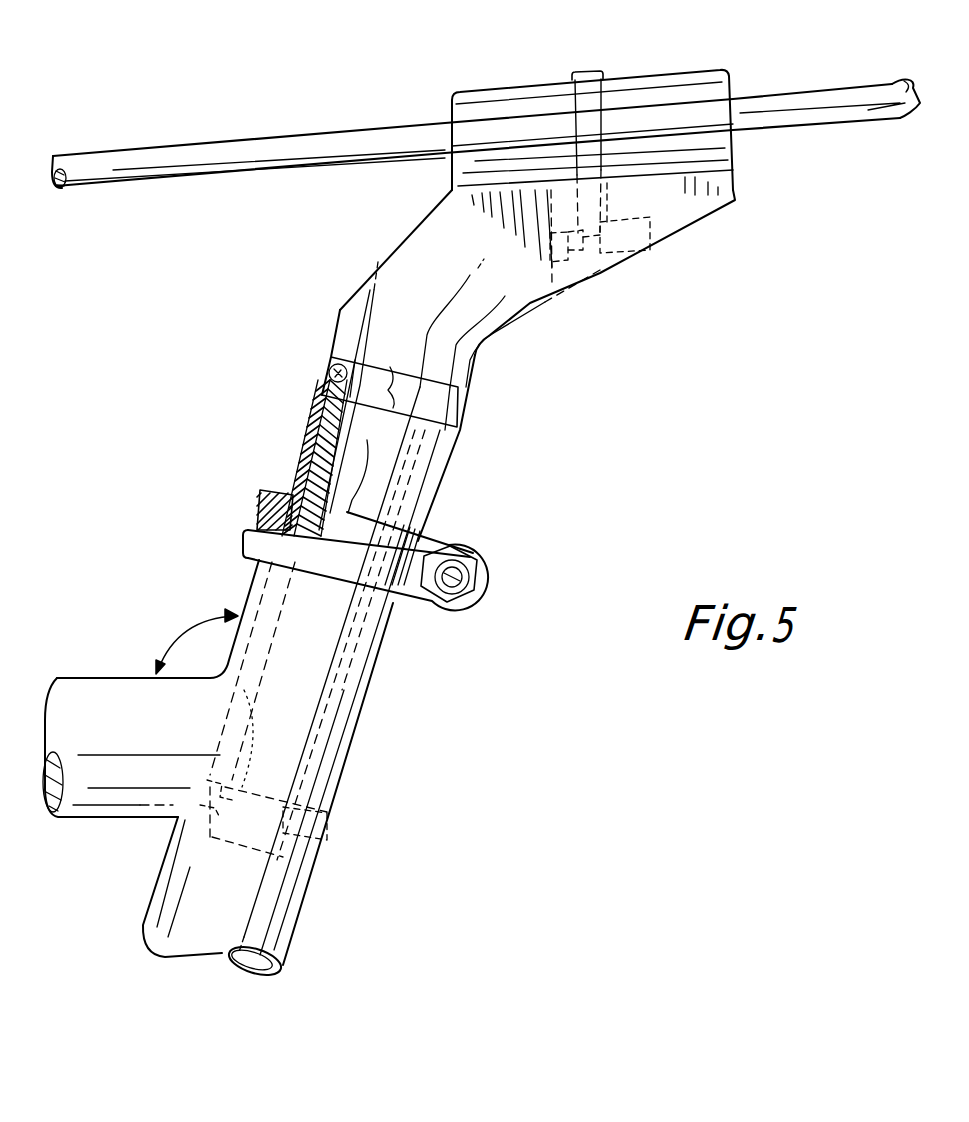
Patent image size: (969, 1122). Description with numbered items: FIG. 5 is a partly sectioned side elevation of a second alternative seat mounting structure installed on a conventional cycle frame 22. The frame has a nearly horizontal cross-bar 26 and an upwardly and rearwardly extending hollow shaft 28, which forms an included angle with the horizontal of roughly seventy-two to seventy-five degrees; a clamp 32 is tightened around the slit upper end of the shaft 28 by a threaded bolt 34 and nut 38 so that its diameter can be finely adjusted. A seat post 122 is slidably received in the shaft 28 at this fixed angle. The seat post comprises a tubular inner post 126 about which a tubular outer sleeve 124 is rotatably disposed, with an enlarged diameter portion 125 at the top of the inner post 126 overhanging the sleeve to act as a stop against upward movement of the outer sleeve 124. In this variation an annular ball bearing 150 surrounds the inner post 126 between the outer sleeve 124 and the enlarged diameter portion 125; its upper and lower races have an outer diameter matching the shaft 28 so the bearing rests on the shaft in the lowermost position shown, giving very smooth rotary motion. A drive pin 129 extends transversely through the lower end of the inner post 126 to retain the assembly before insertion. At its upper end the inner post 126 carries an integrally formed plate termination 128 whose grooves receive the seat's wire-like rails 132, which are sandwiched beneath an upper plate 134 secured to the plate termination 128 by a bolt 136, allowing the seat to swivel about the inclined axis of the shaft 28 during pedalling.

The cycle frame 22 is at (176, 624).
The cross-bar 26 is at (98, 677).
The hollow shaft 28 is at (310, 423).
The clamp 32 is at (443, 537).
The threaded bolt 34 is at (485, 570).
The nut 38 is at (473, 560).
The seat post 122 is at (347, 733).
The tubular outer sleeve 124 is at (313, 489).
The enlarged diameter portion 125 is at (343, 323).
The tubular inner post 126 is at (357, 460).
The plate termination 128 is at (452, 180).
The drive pin 129 is at (320, 840).
The rails 132 is at (304, 139).
The upper plate 134 is at (517, 92).
The bolt 136 is at (590, 72).
The annular ball bearing 150 is at (323, 383).